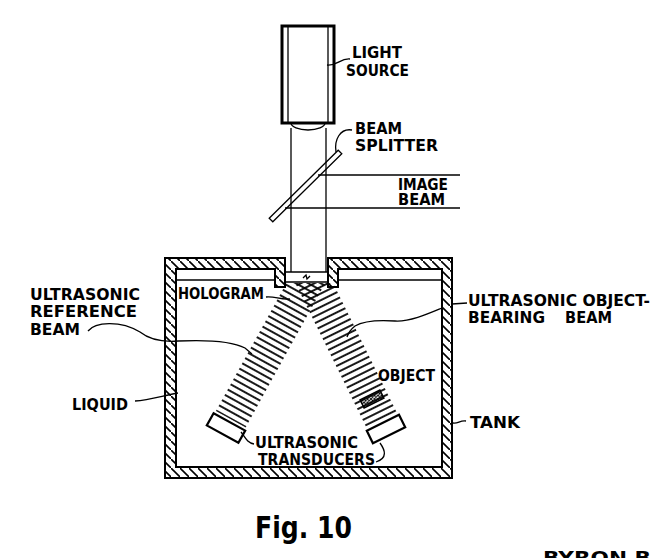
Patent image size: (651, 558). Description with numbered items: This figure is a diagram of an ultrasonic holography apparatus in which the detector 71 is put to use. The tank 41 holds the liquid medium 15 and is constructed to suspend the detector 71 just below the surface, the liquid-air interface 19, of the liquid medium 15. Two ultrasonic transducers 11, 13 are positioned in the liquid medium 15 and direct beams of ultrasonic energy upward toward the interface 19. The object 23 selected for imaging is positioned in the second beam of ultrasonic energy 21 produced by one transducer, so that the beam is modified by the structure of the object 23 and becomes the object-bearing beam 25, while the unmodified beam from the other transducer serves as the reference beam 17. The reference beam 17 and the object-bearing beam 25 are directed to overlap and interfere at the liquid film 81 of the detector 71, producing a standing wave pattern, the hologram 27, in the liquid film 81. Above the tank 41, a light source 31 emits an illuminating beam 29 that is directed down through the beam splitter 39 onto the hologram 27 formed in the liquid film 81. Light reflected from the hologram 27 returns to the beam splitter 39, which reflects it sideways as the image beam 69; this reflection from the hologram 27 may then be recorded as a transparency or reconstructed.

The light source 31 is at (282, 78).
The illuminating beam 29 is at (291, 175).
The beam splitter 39 is at (277, 204).
The image beam 69 is at (433, 175).
The liquid film 81 is at (291, 250).
The detector 71 is at (326, 248).
The hologram 27 is at (330, 298).
The liquid-air interface 19 is at (397, 281).
The liquid medium 15 is at (178, 367).
The reference beam 17 is at (243, 372).
The object-bearing beam 25 is at (358, 362).
The ultrasonic transducer 11 is at (213, 418).
The ultrasonic transducer 13 is at (401, 426).
The second beam of ultrasonic energy 21 is at (389, 404).
The object 23 is at (386, 393).
The tank 41 is at (453, 398).